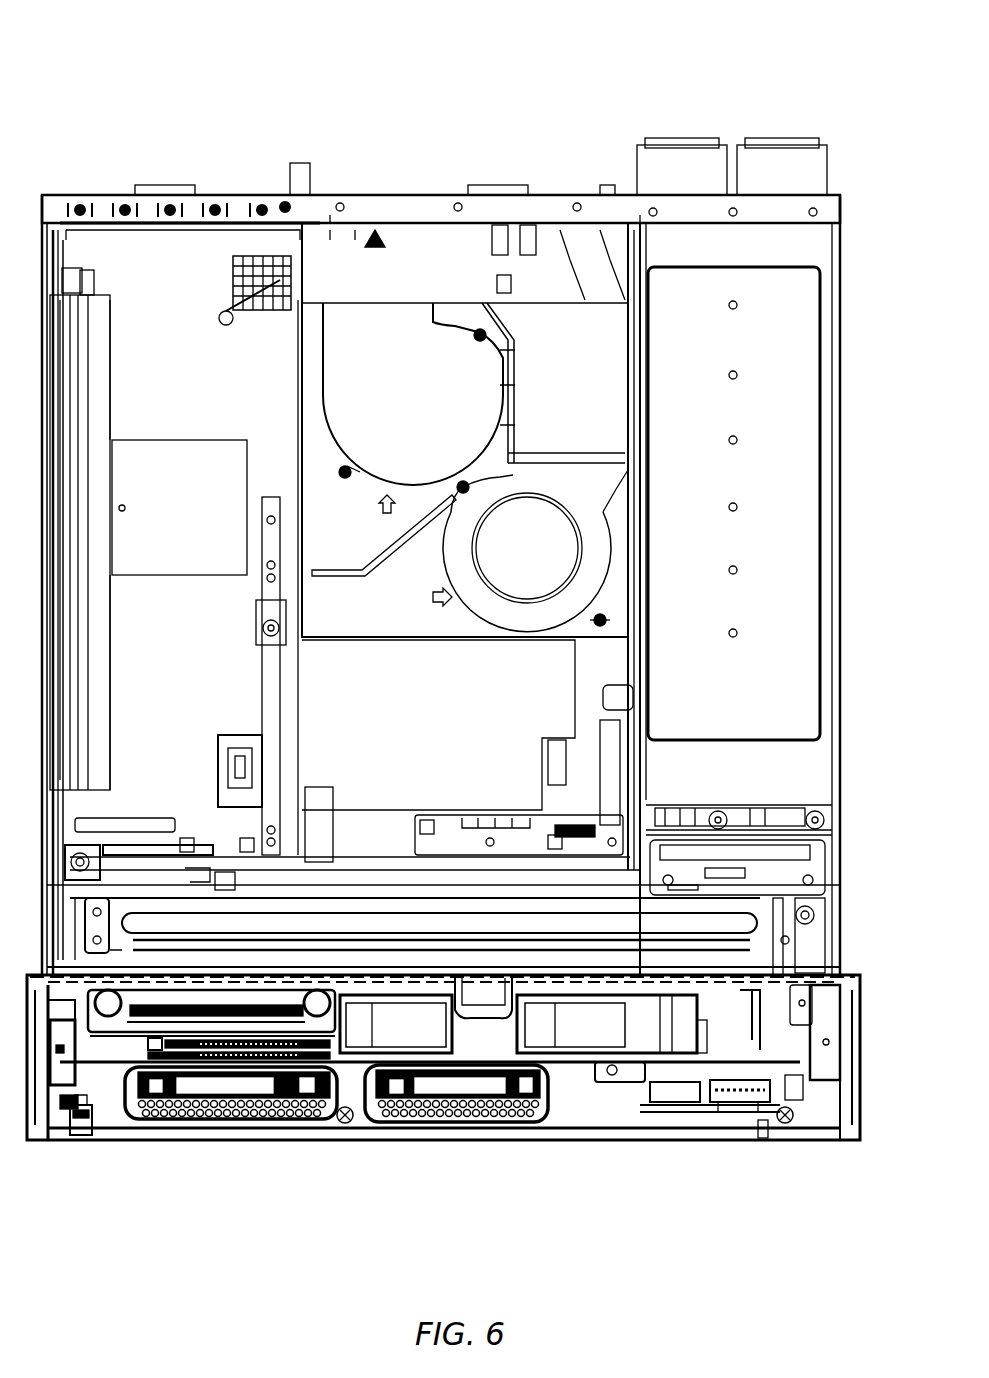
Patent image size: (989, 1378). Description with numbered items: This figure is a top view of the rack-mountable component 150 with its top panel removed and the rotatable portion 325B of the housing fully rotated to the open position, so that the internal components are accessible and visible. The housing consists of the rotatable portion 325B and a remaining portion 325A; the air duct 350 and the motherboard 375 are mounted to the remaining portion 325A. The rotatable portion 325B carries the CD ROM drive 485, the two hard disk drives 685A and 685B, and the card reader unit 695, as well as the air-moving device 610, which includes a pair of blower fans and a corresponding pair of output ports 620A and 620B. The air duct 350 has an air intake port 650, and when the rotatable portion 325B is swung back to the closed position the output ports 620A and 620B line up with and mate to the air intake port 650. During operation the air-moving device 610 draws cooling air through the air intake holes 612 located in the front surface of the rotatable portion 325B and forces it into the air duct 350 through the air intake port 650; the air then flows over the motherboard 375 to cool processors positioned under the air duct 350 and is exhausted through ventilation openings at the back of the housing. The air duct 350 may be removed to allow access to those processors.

The rack-mountable component 150 is at (208, 70).
The remaining portion 325A is at (118, 192).
The rotatable portion 325B is at (845, 1142).
The motherboard 375 is at (185, 285).
The air duct 350 is at (567, 253).
The air intake port 650 is at (440, 813).
The card reader unit 695 is at (88, 1143).
The CD ROM drive 485 is at (132, 1040).
The hard disk drive 685A is at (202, 1085).
The hard disk drive 685B is at (478, 1090).
The output port 620A is at (411, 1037).
The output port 620B is at (565, 1030).
The air intake holes 612 is at (430, 1120).
The air-moving device 610 is at (680, 1052).